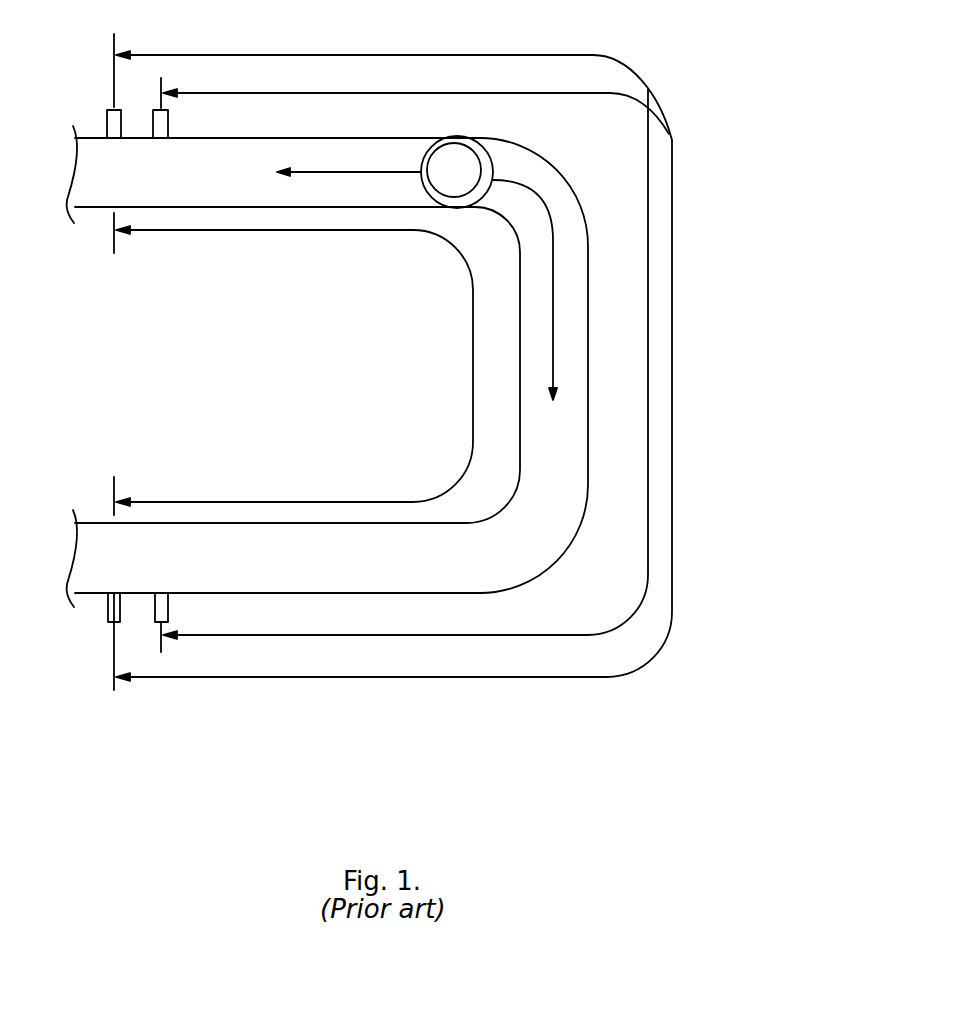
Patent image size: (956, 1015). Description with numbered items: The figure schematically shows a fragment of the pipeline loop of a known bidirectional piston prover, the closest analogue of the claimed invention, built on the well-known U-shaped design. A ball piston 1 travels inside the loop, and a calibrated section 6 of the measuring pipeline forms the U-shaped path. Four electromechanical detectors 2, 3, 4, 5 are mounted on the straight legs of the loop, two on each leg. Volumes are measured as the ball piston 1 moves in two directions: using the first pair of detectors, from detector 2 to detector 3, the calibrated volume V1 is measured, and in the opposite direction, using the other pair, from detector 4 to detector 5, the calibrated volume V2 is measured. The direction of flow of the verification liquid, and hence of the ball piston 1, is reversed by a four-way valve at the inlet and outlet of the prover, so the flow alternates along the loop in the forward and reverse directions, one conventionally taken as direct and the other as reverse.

The ball piston 1 is at (450, 160).
The electromechanical detector 2 is at (170, 122).
The electromechanical detector 3 is at (107, 610).
The electromechanical detector 4 is at (170, 603).
The electromechanical detector 5 is at (105, 118).
The calibrated section of the measuring pipeline 6 is at (293, 502).
The calibrated volume V1 is at (673, 220).
The calibrated volume V2 is at (650, 288).